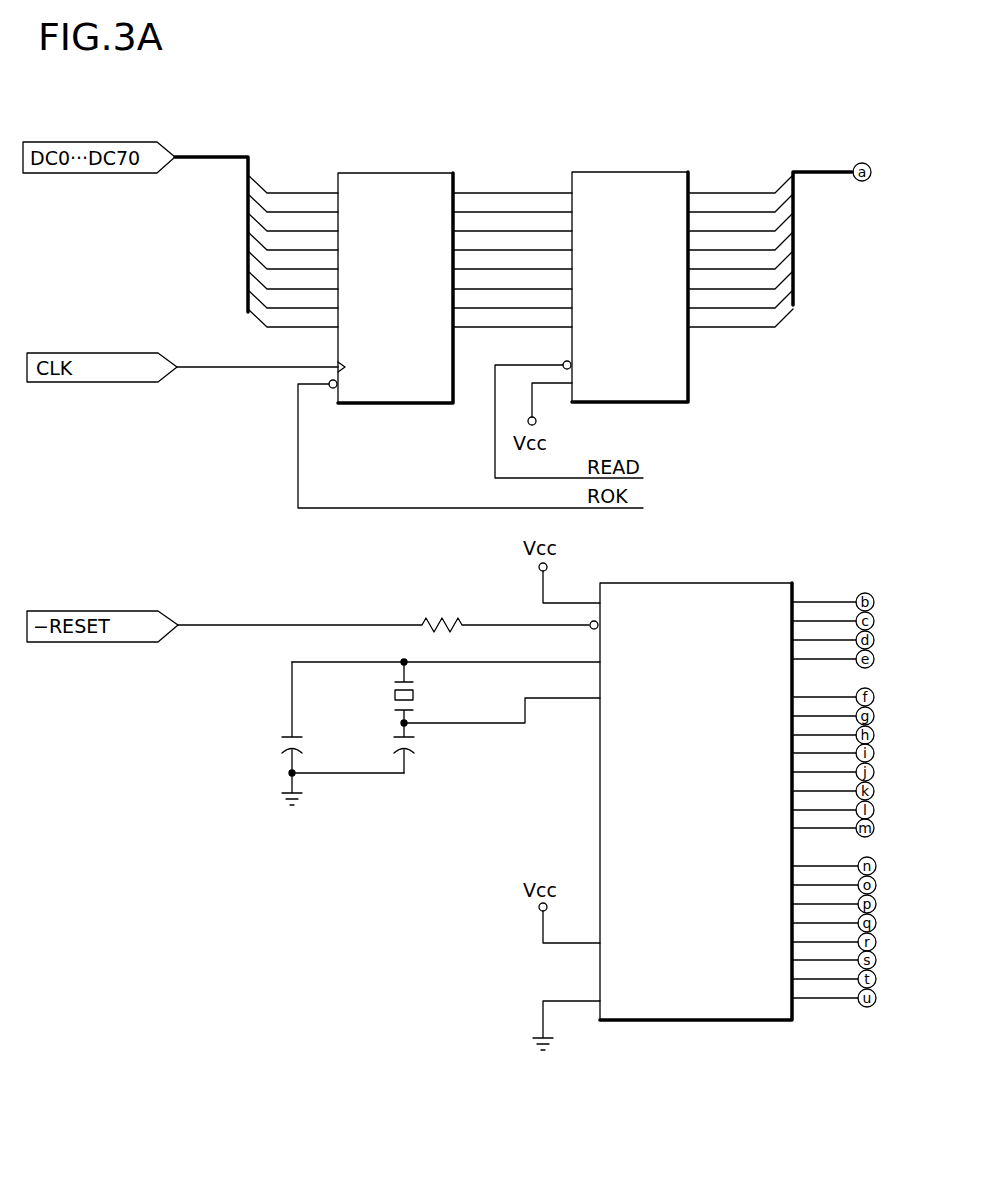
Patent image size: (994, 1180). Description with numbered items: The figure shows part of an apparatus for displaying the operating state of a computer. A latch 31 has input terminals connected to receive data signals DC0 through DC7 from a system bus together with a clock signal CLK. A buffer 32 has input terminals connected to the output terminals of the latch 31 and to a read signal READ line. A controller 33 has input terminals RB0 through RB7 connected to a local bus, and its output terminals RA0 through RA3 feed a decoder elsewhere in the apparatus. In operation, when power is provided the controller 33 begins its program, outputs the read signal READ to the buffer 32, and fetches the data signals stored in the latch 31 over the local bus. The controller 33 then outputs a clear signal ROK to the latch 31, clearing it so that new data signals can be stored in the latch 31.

The latch 31 is at (403, 172).
The buffer 32 is at (637, 172).
The controller 33 is at (697, 583).